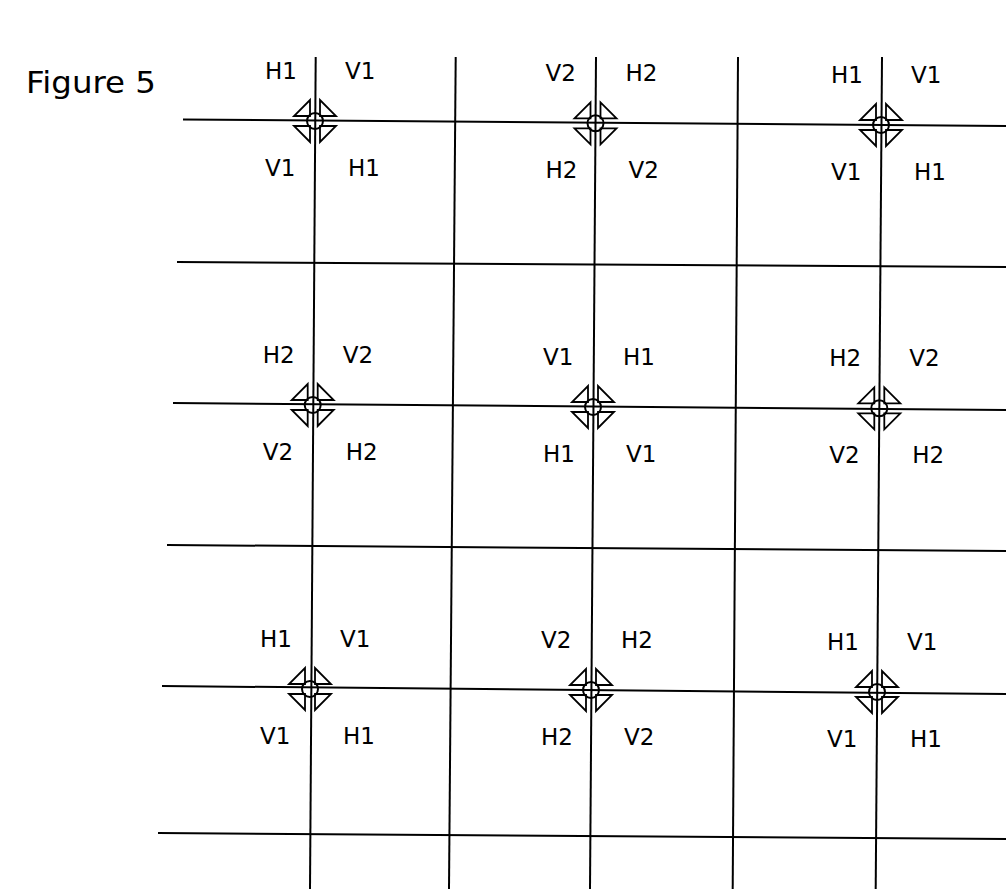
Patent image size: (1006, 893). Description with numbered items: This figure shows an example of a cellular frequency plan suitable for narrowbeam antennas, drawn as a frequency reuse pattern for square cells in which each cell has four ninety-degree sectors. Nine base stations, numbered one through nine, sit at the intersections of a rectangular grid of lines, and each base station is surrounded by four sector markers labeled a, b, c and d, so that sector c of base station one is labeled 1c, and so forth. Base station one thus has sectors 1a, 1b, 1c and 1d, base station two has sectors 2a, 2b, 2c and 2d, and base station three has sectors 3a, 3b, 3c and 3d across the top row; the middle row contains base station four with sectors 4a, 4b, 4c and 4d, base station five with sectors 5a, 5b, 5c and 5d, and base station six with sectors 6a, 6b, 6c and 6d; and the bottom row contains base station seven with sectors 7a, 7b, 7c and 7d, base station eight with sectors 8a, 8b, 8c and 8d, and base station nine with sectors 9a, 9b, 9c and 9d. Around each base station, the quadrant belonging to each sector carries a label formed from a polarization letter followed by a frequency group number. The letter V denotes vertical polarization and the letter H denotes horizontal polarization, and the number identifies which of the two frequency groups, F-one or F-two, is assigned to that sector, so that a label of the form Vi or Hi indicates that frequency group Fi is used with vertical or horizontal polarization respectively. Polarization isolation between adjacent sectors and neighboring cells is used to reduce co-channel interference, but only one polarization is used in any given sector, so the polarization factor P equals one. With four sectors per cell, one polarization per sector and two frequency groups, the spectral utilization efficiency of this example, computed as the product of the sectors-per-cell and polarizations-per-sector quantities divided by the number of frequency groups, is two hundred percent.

The sector a of base station 1 1a is at (339, 101).
The sector b of base station 1 1b is at (339, 138).
The sector c of base station 1 1c is at (295, 138).
The sector d of base station 1 1d is at (294, 101).
The sector a of base station 2 2a is at (620, 103).
The sector b of base station 2 2b is at (620, 140).
The sector c of base station 2 2c is at (576, 140).
The sector d of base station 2 2d is at (575, 103).
The sector a of base station 3 3a is at (905, 105).
The sector b of base station 3 3b is at (905, 142).
The sector c of base station 3 3c is at (861, 142).
The sector d of base station 3 3d is at (860, 105).
The sector a of base station 4 4a is at (337, 385).
The sector b of base station 4 4b is at (337, 422).
The sector c of base station 4 4c is at (293, 422).
The sector d of base station 4 4d is at (292, 385).
The sector a of base station 5 5a is at (617, 387).
The sector b of base station 5 5b is at (617, 424).
The sector c of base station 5 5c is at (573, 424).
The sector d of base station 5 5d is at (572, 387).
The sector a of base station 6 6a is at (903, 388).
The sector b of base station 6 6b is at (903, 425).
The sector c of base station 6 6c is at (859, 425).
The sector d of base station 6 6d is at (858, 388).
The sector a of base station 7 7a is at (334, 669).
The sector b of base station 7 7b is at (334, 706).
The sector c of base station 7 7c is at (290, 706).
The sector d of base station 7 7d is at (289, 669).
The sector a of base station 8 8a is at (615, 670).
The sector b of base station 8 8b is at (615, 707).
The sector c of base station 8 8c is at (571, 707).
The sector d of base station 8 8d is at (570, 670).
The sector a of base station 9 9a is at (901, 672).
The sector b of base station 9 9b is at (901, 709).
The sector c of base station 9 9c is at (857, 709).
The sector d of base station 9 9d is at (856, 672).